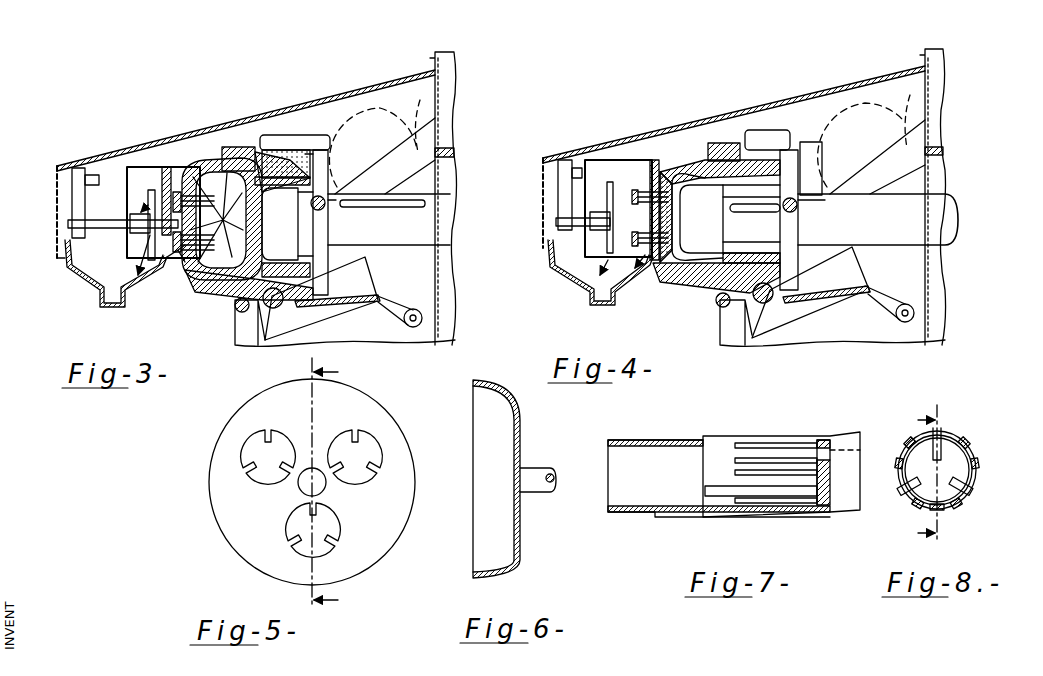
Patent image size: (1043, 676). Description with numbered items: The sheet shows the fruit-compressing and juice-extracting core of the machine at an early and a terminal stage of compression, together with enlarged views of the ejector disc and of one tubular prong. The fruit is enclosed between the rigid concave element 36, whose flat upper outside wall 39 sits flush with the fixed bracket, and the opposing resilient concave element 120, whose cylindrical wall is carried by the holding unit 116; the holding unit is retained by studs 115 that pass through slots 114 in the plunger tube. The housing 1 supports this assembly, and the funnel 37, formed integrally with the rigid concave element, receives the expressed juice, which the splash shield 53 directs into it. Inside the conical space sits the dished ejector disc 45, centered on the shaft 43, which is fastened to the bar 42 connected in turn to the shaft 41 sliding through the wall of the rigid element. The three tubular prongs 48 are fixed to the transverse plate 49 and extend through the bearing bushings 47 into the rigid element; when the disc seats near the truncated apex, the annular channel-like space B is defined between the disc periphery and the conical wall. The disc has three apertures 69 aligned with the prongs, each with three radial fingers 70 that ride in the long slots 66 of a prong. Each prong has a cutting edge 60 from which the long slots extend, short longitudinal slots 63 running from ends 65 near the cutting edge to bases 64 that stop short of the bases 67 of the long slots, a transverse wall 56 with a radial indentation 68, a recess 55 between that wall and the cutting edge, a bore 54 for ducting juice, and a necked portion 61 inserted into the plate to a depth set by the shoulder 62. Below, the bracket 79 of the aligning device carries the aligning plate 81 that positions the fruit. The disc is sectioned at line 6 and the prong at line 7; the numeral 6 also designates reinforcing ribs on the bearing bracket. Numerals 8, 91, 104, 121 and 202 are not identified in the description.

In FIG. 3, the housing 1 is at (435, 285).
In FIG. 4, the housing 1 is at (925, 285).
In FIG. 3, the shaft 8 is at (392, 245).
In FIG. 4, the shaft 8 is at (893, 245).
In FIG. 3, the rigid concave element 36 is at (230, 175).
In FIG. 4, the rigid concave element 36 is at (715, 150).
In FIG. 3, the funnel 37 is at (68, 275).
In FIG. 4, the funnel 37 is at (558, 277).
In FIG. 3, the upper outside wall 39 is at (240, 147).
In FIG. 3, the shaft 41 is at (93, 175).
In FIG. 3, the bar 42 is at (72, 206).
In FIG. 4, the bar 42 is at (558, 192).
In FIG. 3, the shaft 43 is at (100, 220).
In FIG. 4, the shaft 43 is at (556, 222).
In FIG. 6, the shaft 43 is at (540, 492).
In FIG. 3, the ejector disc 45 is at (181, 190).
In FIG. 4, the ejector disc 45 is at (660, 182).
In FIG. 5, the ejector disc 45 is at (390, 548).
In FIG. 6, the ejector disc 45 is at (516, 567).
In FIG. 3, the bearing bushings 47 is at (168, 167).
In FIG. 3, the tubular prongs 48 is at (168, 262).
In FIG. 4, the tubular prongs 48 is at (648, 258).
In FIG. 7, the tubular prongs 48 is at (695, 440).
In FIG. 8, the tubular prongs 48 is at (977, 468).
In FIG. 3, the transverse plate 49 is at (145, 240).
In FIG. 4, the transverse plate 49 is at (600, 200).
In FIG. 3, the splash shield 53 is at (133, 167).
In FIG. 4, the splash shield 53 is at (603, 160).
In FIG. 7, the bore 54 is at (612, 496).
In FIG. 7, the recess 55 is at (852, 500).
In FIG. 7, the transverse wall 56 is at (832, 470).
In FIG. 8, the transverse wall 56 is at (946, 507).
In FIG. 7, the cutting edge 60 is at (860, 434).
In FIG. 7, the necked portion 61 is at (628, 440).
In FIG. 7, the shoulder 62 is at (660, 440).
In FIG. 7, the short longitudinal slots 63 is at (787, 517).
In FIG. 8, the short longitudinal slots 63 is at (966, 438).
In FIG. 7, the bases 64 is at (735, 517).
In FIG. 7, the ends 65 is at (842, 512).
In FIG. 7, the long slots 66 is at (752, 440).
In FIG. 8, the long slots 66 is at (944, 432).
In FIG. 7, the bases 67 is at (712, 440).
In FIG. 7, the radial indentation 68 is at (862, 447).
In FIG. 8, the radial indentation 68 is at (927, 450).
In FIG. 5, the apertures 69 is at (358, 482).
In FIG. 5, the radial fingers 70 is at (374, 466).
In FIG. 3, the bracket 79 is at (318, 322).
In FIG. 4, the bracket 79 is at (806, 305).
In FIG. 3, the aligning plate 81 is at (345, 306).
In FIG. 4, the aligning plate 81 is at (838, 300).
In FIG. 3, the cap 91 is at (302, 135).
In FIG. 4, the cap 91 is at (768, 130).
In FIG. 3, the sloped plate 104 is at (72, 166).
In FIG. 3, the slots 114 is at (422, 207).
In FIG. 3, the studs 115 is at (326, 208).
In FIG. 4, the studs 115 is at (782, 210).
In FIG. 3, the holding unit 116 is at (320, 152).
In FIG. 4, the holding unit 116 is at (790, 150).
In FIG. 3, the resilient concave element 120 is at (280, 150).
In FIG. 3, the tube 121 is at (287, 224).
In FIG. 4, the tube 121 is at (730, 219).
In FIG. 3, the guide lines 202 is at (385, 165).
In FIG. 4, the guide lines 202 is at (842, 165).
In FIG. 3, the annular channel-like space B is at (190, 283).
In FIG. 4, the annular channel-like space B is at (665, 270).
In FIG. 5, the reinforcing ribs 6 is at (331, 483).
In FIG. 8, the section line 7 is at (921, 472).